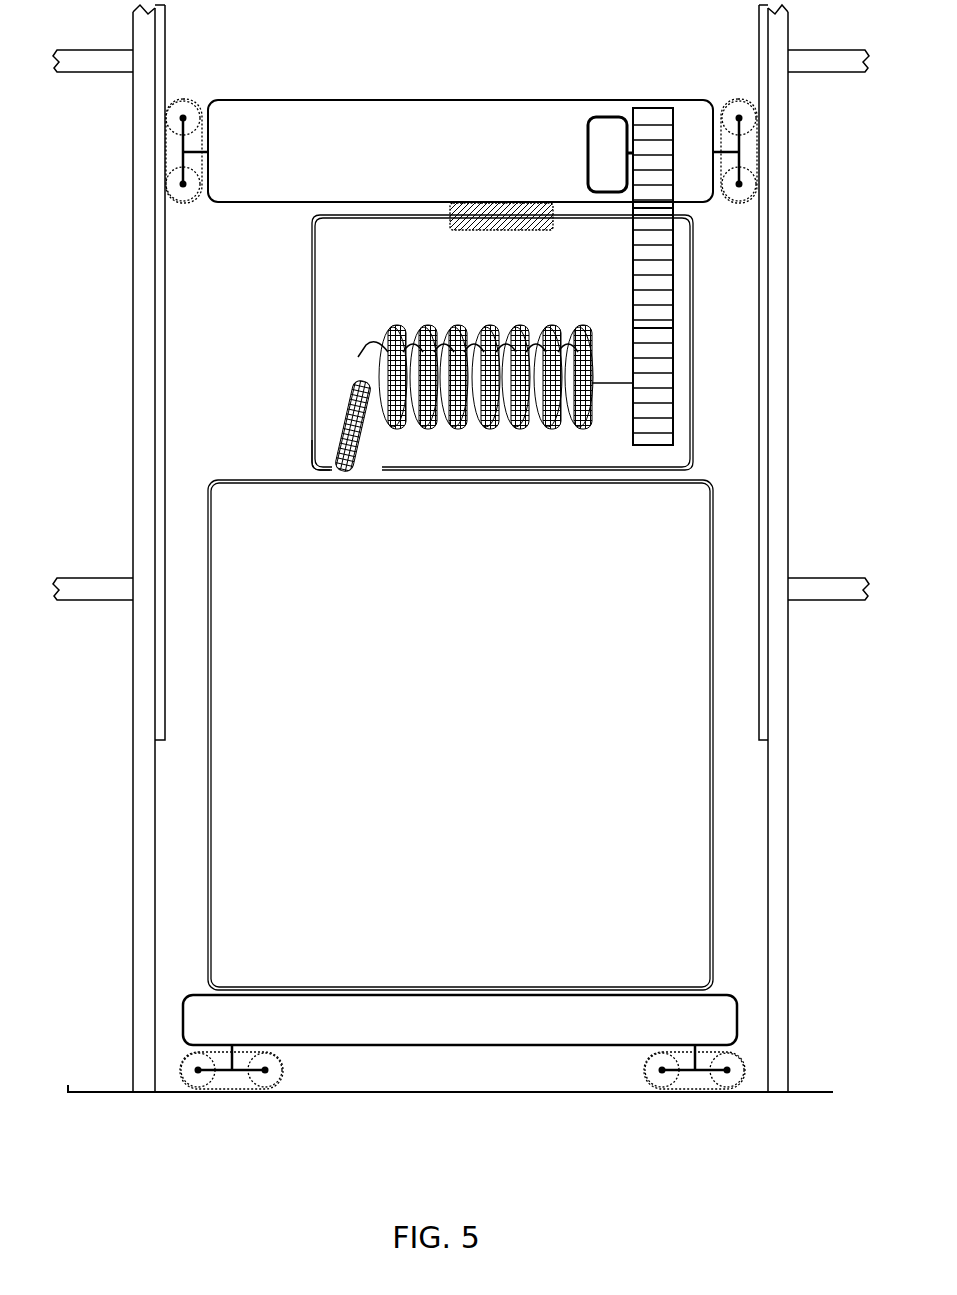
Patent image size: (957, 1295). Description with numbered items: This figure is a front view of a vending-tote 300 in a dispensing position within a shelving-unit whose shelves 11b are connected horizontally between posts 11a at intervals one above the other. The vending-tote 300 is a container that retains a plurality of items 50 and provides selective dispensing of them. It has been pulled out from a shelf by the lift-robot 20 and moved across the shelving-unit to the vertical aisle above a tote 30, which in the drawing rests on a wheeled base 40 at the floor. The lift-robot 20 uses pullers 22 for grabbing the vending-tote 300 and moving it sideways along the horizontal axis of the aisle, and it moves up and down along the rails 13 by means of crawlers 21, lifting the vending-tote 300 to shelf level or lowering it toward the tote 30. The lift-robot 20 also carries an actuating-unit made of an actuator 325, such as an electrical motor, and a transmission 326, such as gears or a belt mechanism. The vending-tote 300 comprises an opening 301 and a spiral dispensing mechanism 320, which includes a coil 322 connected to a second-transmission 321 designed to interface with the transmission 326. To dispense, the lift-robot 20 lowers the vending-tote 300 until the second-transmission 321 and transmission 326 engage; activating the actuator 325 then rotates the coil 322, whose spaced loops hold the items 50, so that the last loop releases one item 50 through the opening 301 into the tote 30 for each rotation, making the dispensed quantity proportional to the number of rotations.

The rails 13 is at (165, 50).
The posts 11a is at (120, 72).
The shelves 11b is at (135, 240).
The lift-robot 20 is at (392, 100).
The crawlers 21 is at (183, 107).
The pullers 22 is at (480, 202).
The actuator 325 is at (598, 148).
The transmission 326 is at (633, 108).
The second-transmission 321 is at (675, 333).
The vending-tote 300 is at (312, 323).
The opening 301 is at (327, 463).
The spiral dispensing mechanism 320 is at (386, 286).
The coil 322 is at (357, 352).
The items 50 is at (512, 327).
The tote 30 is at (210, 538).
The base with wheels 40 is at (717, 992).